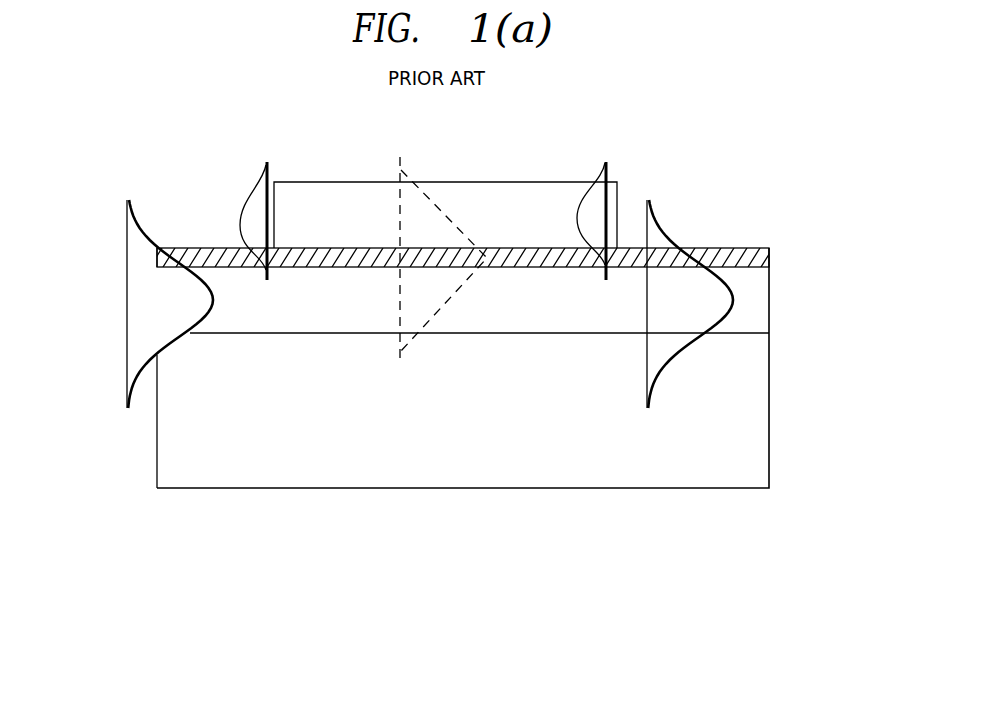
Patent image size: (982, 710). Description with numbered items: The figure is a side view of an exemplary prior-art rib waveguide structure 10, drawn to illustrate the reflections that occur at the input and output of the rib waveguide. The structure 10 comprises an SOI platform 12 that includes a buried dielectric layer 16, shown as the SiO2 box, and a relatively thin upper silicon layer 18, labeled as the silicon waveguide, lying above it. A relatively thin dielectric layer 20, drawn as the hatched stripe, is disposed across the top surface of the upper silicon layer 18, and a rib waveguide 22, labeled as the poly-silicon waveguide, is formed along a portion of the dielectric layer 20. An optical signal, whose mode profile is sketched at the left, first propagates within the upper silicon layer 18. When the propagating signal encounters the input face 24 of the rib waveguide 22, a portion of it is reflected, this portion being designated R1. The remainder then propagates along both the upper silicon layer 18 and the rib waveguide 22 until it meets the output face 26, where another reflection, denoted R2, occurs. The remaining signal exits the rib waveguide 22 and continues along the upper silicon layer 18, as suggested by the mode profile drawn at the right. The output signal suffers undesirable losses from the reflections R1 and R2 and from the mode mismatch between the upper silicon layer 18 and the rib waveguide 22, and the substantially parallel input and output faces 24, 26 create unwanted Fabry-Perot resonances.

The rib waveguide structure 10 is at (108, 313).
The SOI platform 12 is at (812, 410).
The buried dielectric layer 16 is at (170, 459).
The upper silicon layer 18 is at (757, 297).
The dielectric layer 20 is at (735, 248).
The rib waveguide 22 is at (447, 190).
The input face 24 is at (273, 187).
The output face 26 is at (620, 197).
The reflection at input face R1 is at (247, 212).
The reflection at output face R2 is at (598, 200).